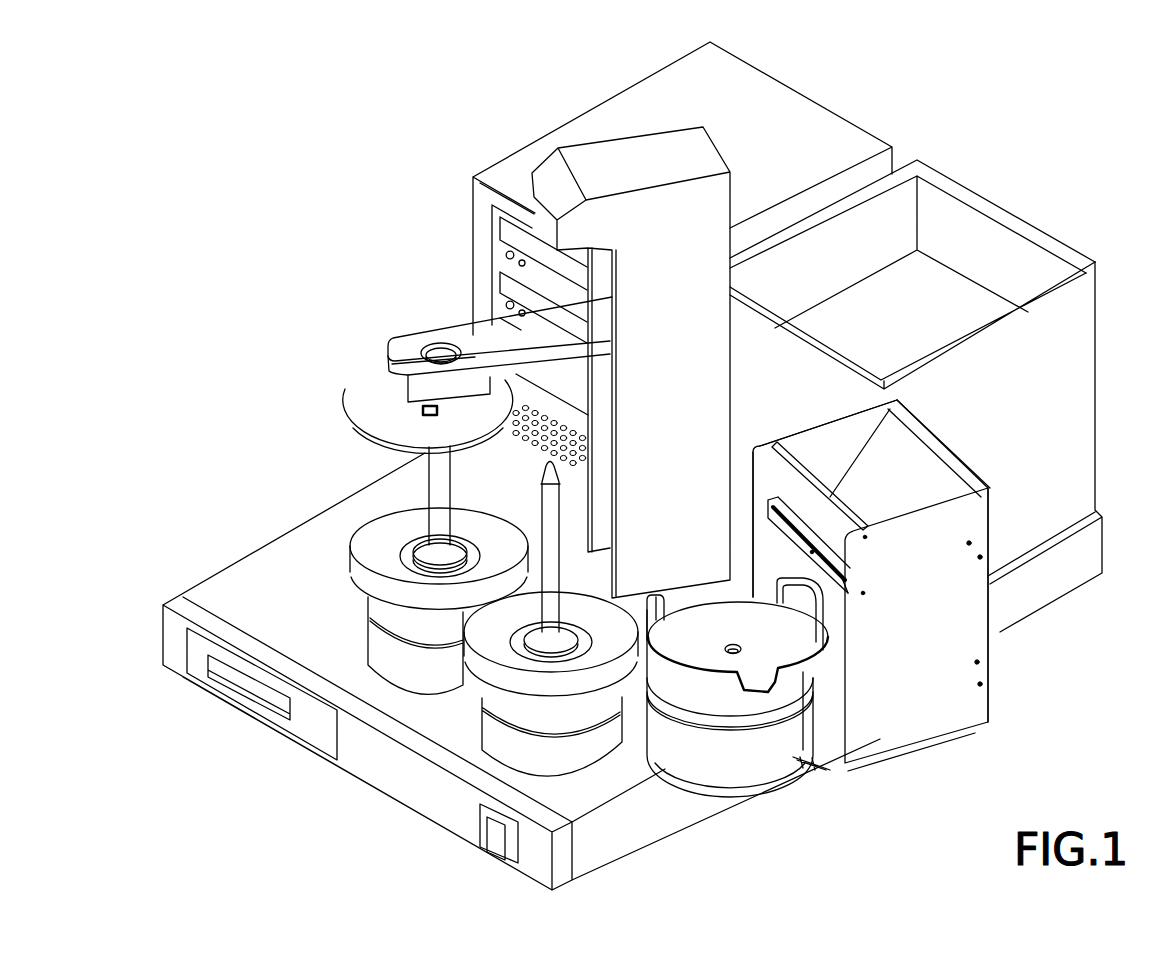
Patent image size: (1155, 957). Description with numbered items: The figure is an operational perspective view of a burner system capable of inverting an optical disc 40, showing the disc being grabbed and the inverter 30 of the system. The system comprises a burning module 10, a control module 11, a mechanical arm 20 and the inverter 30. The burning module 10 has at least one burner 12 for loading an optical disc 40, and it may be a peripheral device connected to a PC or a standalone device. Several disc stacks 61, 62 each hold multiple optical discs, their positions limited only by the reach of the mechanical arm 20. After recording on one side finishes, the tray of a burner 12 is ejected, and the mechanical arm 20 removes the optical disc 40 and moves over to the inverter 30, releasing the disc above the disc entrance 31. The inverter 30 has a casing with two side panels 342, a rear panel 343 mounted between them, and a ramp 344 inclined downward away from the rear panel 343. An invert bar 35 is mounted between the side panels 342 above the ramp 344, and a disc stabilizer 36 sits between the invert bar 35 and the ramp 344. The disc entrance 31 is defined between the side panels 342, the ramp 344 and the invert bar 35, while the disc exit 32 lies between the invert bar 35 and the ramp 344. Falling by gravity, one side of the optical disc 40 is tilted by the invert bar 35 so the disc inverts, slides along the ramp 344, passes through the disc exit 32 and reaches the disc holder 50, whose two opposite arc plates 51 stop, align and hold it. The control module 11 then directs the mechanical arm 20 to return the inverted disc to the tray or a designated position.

The burning module 10 is at (638, 100).
The control module 11 is at (262, 577).
The burner 12 is at (498, 241).
The mechanical arm 20 is at (478, 338).
The inverter 30 is at (948, 748).
The disc entrance 31 is at (868, 415).
The disc exit 32 is at (777, 562).
The invert bar 35 is at (828, 498).
The disc stabilizer 36 is at (833, 575).
The optical disc 40 is at (362, 389).
The disc holder 50 is at (753, 680).
The arc plate 51 is at (806, 610).
The disc stack 61 is at (417, 667).
The disc stack 62 is at (572, 753).
The side panel 342 is at (828, 443).
The rear panel 343 is at (962, 465).
The ramp 344 is at (917, 468).